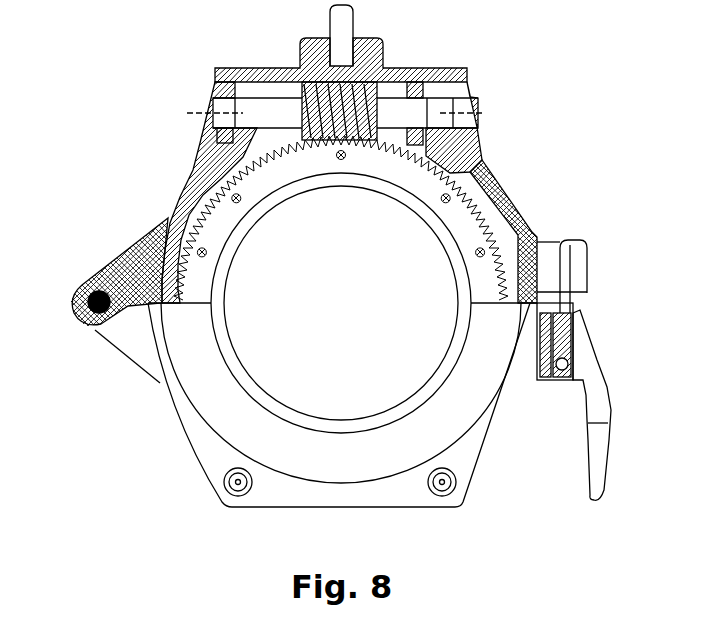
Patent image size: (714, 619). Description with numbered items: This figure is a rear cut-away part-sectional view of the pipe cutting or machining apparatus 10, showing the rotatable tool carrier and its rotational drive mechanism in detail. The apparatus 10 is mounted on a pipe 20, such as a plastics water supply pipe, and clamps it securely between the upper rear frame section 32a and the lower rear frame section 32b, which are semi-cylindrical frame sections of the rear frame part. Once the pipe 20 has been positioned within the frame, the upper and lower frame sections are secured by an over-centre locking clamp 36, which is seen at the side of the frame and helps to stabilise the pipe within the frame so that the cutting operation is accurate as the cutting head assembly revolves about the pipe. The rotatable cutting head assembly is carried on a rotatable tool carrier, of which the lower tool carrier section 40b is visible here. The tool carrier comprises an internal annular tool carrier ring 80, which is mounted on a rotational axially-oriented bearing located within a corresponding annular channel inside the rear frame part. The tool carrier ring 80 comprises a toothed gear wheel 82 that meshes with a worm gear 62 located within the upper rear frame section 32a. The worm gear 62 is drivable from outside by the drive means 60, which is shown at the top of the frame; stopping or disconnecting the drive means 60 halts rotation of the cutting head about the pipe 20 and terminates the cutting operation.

The pipe cutting or machining apparatus 10 is at (150, 480).
The pipe 20 is at (394, 181).
The upper rear frame section 32a is at (147, 247).
The lower rear frame section 32b is at (134, 355).
The over-centre locking clamp 36 is at (588, 385).
The lower tool carrier section 40b is at (188, 353).
The drive means 60 is at (473, 100).
The worm gear 62 is at (280, 70).
The tool carrier ring 80 is at (500, 200).
The toothed gear wheel 82 is at (527, 230).